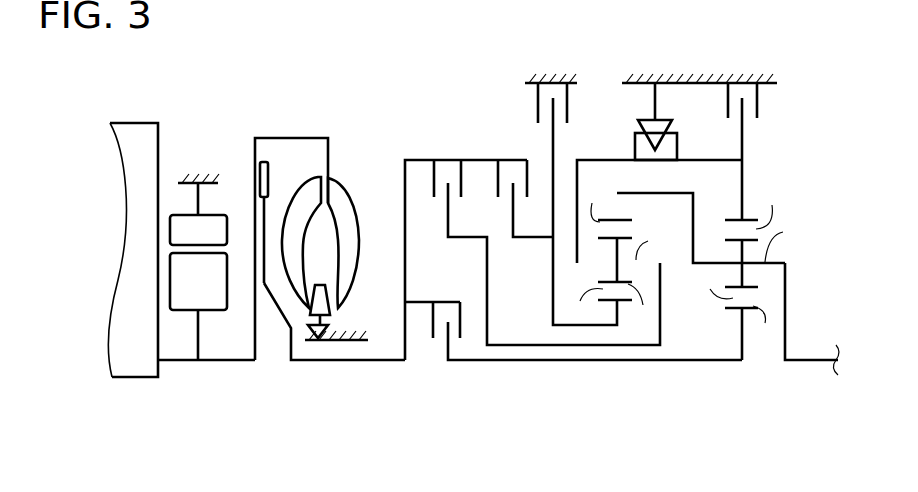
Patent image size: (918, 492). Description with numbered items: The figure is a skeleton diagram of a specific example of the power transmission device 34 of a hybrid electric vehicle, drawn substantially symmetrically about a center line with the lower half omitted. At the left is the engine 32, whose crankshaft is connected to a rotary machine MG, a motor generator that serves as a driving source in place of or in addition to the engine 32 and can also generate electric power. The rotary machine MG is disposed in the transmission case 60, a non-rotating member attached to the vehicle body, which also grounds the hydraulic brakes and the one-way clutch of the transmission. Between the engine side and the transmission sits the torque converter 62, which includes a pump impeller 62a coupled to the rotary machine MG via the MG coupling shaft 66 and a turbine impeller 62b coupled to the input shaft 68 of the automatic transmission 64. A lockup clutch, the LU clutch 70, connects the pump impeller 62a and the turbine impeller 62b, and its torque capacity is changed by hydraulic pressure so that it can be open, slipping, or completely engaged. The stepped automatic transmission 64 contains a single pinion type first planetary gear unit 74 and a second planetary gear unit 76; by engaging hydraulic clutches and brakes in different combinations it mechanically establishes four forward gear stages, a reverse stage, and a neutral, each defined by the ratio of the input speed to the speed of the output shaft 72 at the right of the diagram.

The engine 32 is at (134, 131).
The power transmission device 34 is at (389, 434).
The transmission case 60 is at (198, 179).
The torque converter 62 is at (323, 214).
The pump impeller 62a is at (348, 218).
The turbine impeller 62b is at (302, 208).
The automatic transmission 64 is at (614, 213).
The MG coupling shaft 66 is at (236, 362).
The input shaft 68 is at (351, 362).
The LU clutch 70 is at (259, 172).
The output shaft 72 is at (808, 362).
The first planetary gear unit 74 is at (606, 372).
The second planetary gear unit 76 is at (729, 375).